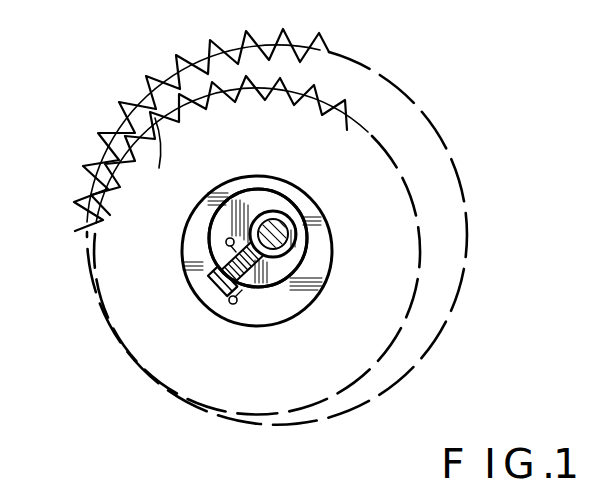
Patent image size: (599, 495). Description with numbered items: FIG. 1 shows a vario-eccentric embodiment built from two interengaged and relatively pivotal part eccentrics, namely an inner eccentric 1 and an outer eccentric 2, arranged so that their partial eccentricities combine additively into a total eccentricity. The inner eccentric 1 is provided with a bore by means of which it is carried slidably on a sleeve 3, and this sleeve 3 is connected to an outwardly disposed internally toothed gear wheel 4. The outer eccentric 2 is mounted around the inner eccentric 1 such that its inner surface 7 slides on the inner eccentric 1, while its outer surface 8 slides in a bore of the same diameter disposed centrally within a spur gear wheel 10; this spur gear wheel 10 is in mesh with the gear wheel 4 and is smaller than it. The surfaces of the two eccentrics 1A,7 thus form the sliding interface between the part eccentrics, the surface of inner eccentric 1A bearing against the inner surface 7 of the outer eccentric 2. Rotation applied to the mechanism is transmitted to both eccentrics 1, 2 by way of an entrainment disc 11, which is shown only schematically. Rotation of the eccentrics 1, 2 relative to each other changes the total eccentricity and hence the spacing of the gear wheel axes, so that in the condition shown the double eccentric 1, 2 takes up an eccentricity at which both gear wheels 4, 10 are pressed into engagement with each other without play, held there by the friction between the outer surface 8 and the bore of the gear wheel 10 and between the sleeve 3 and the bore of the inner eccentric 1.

The inner eccentric 1 is at (274, 276).
The surface of inner eccentric 1A is at (258, 246).
The inner surface 7 is at (303, 262).
The surfaces of the two eccentrics 1A,7 is at (300, 246).
The outer eccentric 2 is at (185, 236).
The sleeve 3 is at (288, 221).
The internally toothed gear wheel 4 is at (97, 216).
The outer surface 8 is at (325, 212).
The spur gear wheel 10 is at (138, 127).
The entrainment disc 11 is at (273, 212).